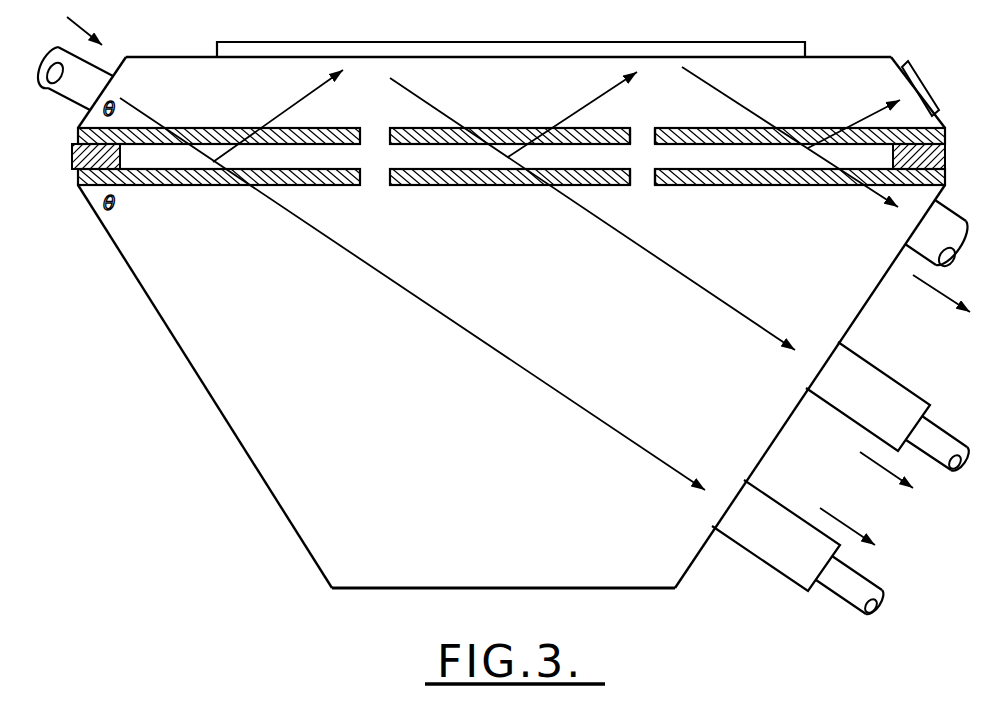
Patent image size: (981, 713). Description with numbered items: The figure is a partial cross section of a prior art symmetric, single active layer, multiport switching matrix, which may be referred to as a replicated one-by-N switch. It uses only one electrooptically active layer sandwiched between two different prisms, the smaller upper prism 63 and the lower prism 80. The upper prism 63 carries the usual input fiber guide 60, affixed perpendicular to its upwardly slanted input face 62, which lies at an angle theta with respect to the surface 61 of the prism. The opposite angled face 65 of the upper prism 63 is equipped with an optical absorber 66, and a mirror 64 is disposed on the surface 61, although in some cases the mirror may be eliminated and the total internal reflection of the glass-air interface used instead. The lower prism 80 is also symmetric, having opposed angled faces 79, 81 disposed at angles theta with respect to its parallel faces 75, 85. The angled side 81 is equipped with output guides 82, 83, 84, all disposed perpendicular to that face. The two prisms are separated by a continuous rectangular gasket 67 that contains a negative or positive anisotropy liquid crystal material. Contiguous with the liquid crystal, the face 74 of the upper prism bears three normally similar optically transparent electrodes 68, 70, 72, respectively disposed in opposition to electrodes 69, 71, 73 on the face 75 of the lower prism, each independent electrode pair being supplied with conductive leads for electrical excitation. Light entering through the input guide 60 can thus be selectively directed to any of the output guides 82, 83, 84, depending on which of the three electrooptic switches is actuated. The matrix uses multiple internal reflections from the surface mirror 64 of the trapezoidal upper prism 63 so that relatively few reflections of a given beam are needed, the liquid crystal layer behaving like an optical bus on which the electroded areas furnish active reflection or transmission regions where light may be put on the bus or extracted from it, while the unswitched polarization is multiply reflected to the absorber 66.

The input fiber guide 60 is at (104, 68).
The surface of prism 61 is at (622, 62).
The input face 62 is at (111, 82).
The upper prism 63 is at (278, 68).
The mirror 64 is at (512, 40).
The angled face 65 is at (884, 72).
The optical absorber 66 is at (926, 88).
The rectangular gasket 67 is at (72, 154).
The transparent electrode 68 is at (314, 145).
The electrode 69 is at (362, 167).
The transparent electrode 70 is at (510, 158).
The electrode 71 is at (476, 166).
The transparent electrode 72 is at (838, 128).
The electrode 73 is at (775, 170).
The face of prism 74 is at (641, 127).
The face of prism 75 is at (640, 185).
The angled face 79 is at (168, 338).
The lower prism 80 is at (235, 276).
The angled side 81 is at (860, 323).
The output guide 82 is at (916, 251).
The output guide 83 is at (914, 394).
The output guide 84 is at (786, 508).
The face of prism 85 is at (508, 588).